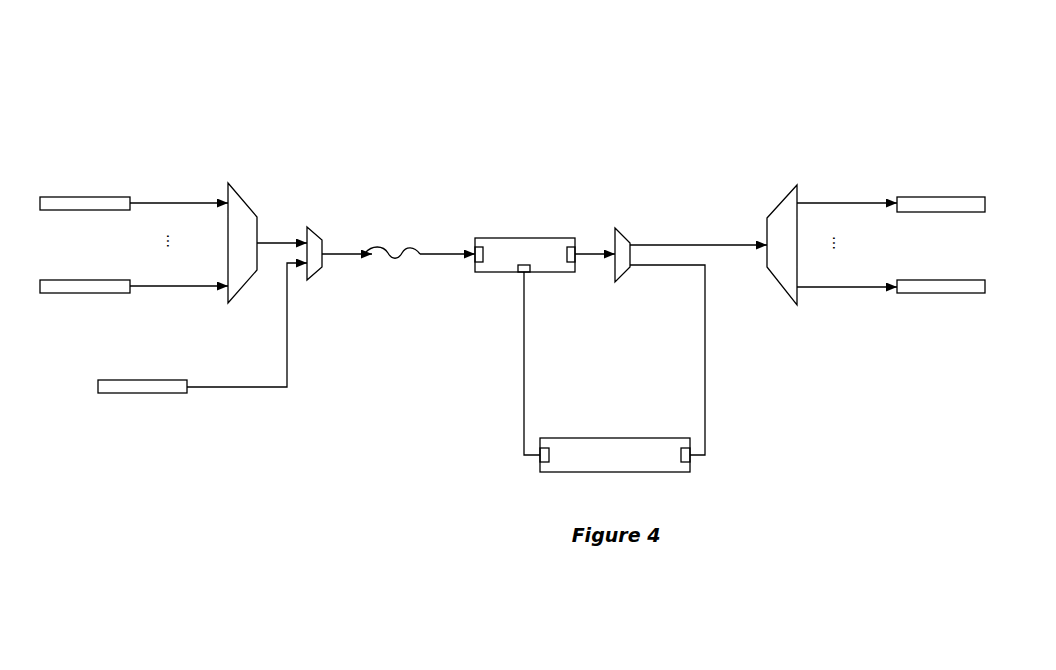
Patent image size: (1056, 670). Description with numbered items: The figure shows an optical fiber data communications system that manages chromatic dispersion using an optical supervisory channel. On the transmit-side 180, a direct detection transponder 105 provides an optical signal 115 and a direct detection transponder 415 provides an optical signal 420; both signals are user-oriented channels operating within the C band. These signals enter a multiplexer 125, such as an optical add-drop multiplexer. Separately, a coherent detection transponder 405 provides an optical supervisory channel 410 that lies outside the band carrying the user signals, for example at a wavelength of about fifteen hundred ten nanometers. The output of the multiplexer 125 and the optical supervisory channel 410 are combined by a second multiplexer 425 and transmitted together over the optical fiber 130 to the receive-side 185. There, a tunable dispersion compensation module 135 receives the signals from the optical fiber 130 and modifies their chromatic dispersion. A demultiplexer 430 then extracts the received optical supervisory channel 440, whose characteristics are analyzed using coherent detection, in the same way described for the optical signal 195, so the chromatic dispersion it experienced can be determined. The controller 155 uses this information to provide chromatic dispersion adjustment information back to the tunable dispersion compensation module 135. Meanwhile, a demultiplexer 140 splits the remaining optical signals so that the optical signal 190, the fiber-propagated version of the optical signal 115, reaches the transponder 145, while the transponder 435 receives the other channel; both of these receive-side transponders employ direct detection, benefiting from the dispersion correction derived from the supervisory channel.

The transmit-side 180 is at (291, 50).
The receive-side 185 is at (711, 52).
The direct detection transponder 105 is at (130, 197).
The direct detection transponder 415 is at (130, 293).
The optical signal 115 is at (153, 203).
The optical signal 420 is at (153, 286).
The multiplexer 125 is at (257, 217).
The multiplexer 425 is at (308, 228).
The coherent detection transponder 405 is at (178, 393).
The optical supervisory channel 410 is at (248, 387).
The optical fiber 130 is at (395, 240).
The tunable dispersion compensation module 135 is at (525, 255).
The demultiplexer 430 is at (627, 236).
The optical supervisory channel 440 is at (705, 370).
The controller 155 is at (607, 372).
The demultiplexer 140 is at (775, 232).
The optical signal 190 is at (865, 203).
The optical signal 195 is at (868, 287).
The transponder 145 is at (965, 197).
The transponder 435 is at (965, 293).